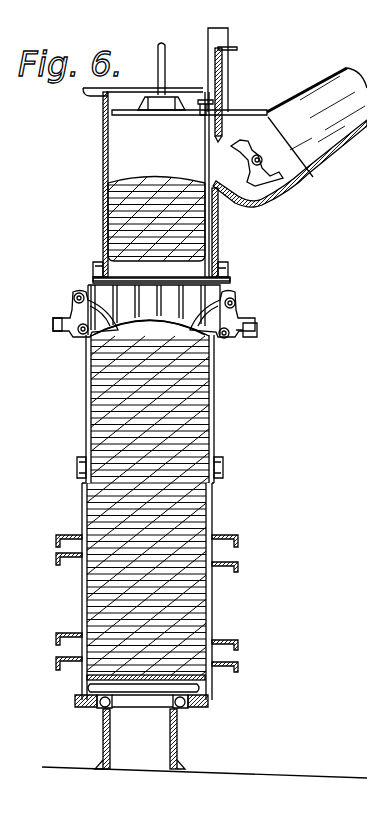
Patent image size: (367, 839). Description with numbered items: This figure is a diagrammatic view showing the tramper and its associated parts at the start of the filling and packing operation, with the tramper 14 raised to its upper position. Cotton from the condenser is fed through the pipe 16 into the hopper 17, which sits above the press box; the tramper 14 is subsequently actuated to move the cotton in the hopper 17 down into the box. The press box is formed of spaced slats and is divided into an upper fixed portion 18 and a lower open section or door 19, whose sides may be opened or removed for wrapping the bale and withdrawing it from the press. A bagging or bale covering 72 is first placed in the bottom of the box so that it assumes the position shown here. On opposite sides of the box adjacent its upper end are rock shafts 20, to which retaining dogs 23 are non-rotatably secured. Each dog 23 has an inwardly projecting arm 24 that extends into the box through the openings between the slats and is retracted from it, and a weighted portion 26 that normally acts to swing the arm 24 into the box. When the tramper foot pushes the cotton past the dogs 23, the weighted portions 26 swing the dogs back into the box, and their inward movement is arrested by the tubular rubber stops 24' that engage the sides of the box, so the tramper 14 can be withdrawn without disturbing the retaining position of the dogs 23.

The tramper 14 is at (157, 120).
The pipe 16 is at (301, 180).
The hopper 17 is at (103, 155).
The upper fixed portion 18 is at (217, 422).
The lower open section 19 is at (213, 518).
The rock shaft 20 is at (233, 302).
The retaining dog 23 is at (70, 297).
The arm 24 is at (165, 350).
The tubular rubber member 24' is at (157, 330).
The weighted portion 26 is at (52, 323).
The bagging 72 is at (85, 683).